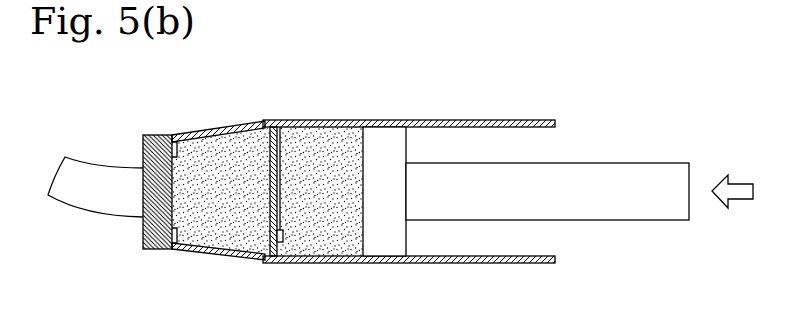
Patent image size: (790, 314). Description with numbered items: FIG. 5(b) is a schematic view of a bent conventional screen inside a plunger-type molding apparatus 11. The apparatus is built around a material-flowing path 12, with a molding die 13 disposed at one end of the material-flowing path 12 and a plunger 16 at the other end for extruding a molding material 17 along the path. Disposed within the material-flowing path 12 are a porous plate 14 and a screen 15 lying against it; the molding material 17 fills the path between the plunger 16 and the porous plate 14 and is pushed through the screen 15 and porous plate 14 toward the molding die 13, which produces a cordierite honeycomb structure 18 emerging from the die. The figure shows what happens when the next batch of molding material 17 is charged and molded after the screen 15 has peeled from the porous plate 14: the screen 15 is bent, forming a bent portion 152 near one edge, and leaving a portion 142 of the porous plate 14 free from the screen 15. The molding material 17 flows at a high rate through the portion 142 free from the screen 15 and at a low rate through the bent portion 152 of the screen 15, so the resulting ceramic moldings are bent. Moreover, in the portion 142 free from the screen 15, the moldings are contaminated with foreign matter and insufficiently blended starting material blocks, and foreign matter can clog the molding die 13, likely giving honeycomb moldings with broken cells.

The molding apparatus 11 is at (541, 105).
The material-flowing path 12 is at (436, 143).
The molding die 13 is at (158, 135).
The porous plate 14 is at (266, 121).
The portion free from the screen 142 is at (258, 258).
The screen 15 is at (276, 128).
The bent portion 152 is at (283, 241).
The plunger 16 is at (615, 170).
The molding material 17 is at (330, 153).
The cordierite honeycomb structure 18 is at (77, 203).